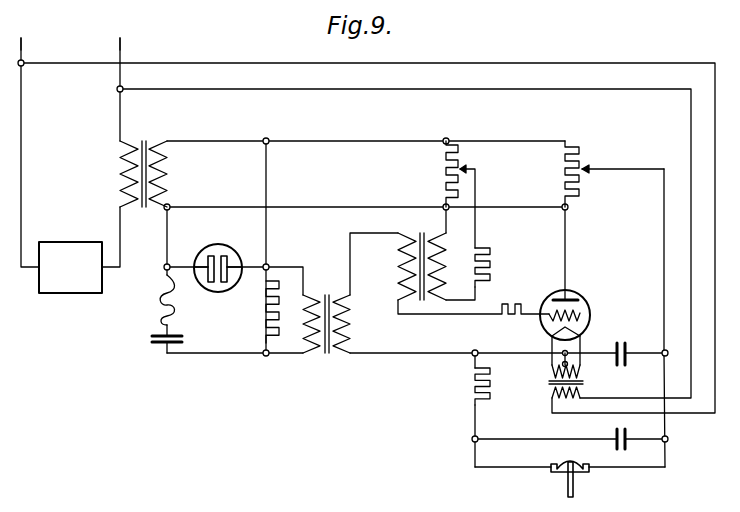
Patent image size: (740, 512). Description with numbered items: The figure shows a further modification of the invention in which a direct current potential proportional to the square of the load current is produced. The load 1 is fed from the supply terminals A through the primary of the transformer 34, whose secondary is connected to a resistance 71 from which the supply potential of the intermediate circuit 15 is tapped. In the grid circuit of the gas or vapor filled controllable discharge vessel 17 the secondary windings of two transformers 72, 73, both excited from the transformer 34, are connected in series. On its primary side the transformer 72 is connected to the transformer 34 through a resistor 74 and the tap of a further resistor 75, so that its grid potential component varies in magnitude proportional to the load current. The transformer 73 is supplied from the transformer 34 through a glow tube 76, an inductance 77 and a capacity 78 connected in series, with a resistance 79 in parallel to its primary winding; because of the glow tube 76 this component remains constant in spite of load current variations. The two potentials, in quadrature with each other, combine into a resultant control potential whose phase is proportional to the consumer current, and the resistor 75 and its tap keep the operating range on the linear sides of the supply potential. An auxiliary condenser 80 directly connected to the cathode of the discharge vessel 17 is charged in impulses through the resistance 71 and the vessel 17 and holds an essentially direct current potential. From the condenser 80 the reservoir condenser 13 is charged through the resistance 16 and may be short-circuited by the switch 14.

The supply terminals A is at (22, 50).
The load 1 is at (80, 241).
The reservoir condenser 13 is at (614, 437).
The switch 14 is at (556, 463).
The intermediate circuit 15 is at (616, 325).
The resistance 16 is at (490, 389).
The gas or vapor filled controllable discharge vessel 17 is at (577, 298).
The transformer 34 is at (146, 141).
The resistance 71 is at (565, 176).
The transformer 72 is at (421, 232).
The transformer 73 is at (327, 294).
The resistor 74 is at (490, 268).
The resistor 75 is at (446, 176).
The glow tube 76 is at (220, 252).
The inductance 77 is at (162, 298).
The capacity 78 is at (150, 339).
The resistance 79 is at (266, 320).
The auxiliary condenser 80 is at (628, 346).